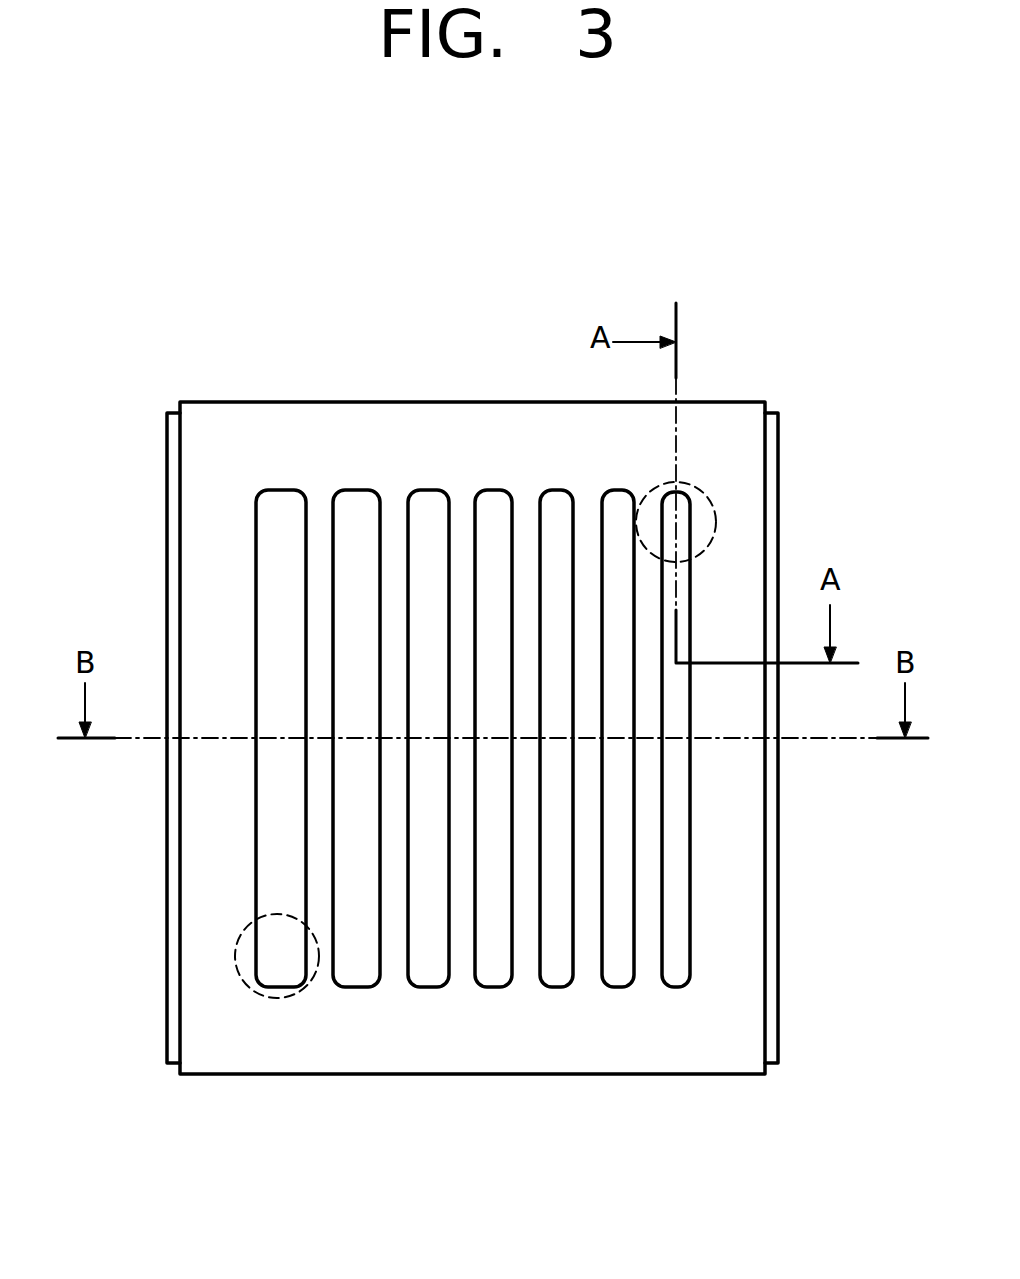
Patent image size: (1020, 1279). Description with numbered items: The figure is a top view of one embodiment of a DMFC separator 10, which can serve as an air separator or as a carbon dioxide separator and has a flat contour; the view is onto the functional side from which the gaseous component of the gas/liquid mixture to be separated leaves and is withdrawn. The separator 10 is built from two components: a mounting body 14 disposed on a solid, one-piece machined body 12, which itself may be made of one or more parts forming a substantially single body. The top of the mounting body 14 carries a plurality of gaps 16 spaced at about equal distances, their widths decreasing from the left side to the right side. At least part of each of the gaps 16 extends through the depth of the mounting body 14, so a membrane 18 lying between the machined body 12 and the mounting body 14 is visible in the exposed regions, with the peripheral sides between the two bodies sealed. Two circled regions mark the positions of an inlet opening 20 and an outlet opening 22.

The separator 10 is at (752, 338).
The machined body 12 is at (167, 1013).
The mounting body 14 is at (403, 1058).
The gaps 16 is at (600, 774).
The membrane 18 is at (284, 490).
The inlet opening 20 is at (235, 950).
The outlet opening 22 is at (716, 517).